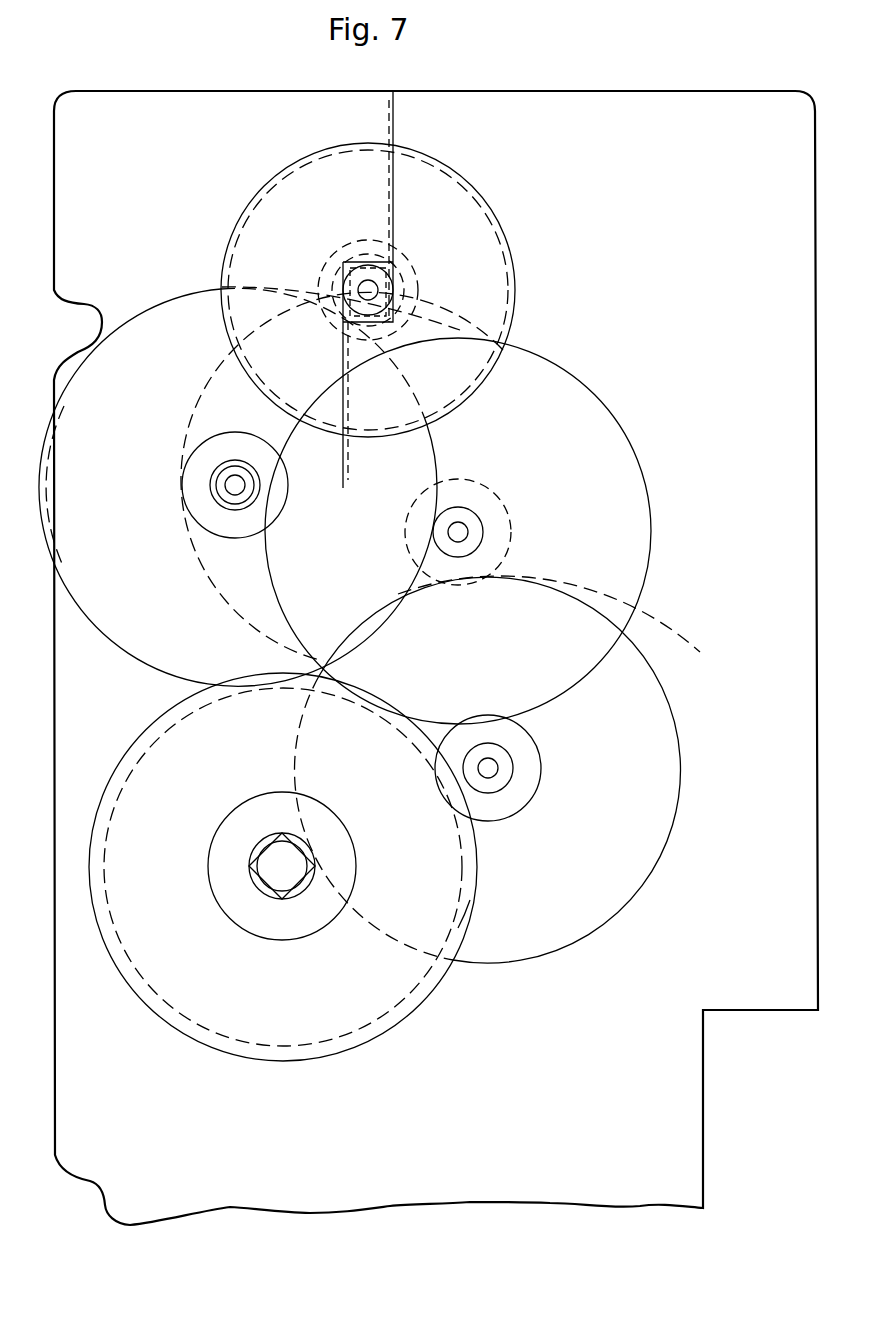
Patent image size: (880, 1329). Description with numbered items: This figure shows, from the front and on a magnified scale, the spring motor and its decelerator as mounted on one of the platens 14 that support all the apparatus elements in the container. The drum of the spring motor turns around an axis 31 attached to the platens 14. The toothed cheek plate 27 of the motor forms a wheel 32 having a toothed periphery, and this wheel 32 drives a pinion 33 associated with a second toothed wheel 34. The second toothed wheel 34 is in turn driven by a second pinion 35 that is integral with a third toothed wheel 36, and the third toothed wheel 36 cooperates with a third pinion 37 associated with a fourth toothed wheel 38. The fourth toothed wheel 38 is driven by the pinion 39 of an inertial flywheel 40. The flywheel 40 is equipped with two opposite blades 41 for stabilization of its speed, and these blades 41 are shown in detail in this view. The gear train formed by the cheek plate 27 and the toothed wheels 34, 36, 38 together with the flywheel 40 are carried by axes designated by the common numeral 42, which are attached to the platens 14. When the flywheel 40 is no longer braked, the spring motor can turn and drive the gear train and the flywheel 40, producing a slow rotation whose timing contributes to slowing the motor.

The platens 14 is at (171, 122).
The toothed cheek plate 27 is at (226, 1003).
The axis 31 is at (289, 877).
The wheel 32 is at (468, 912).
The pinion 33 is at (540, 787).
The second toothed wheel 34 is at (678, 792).
The second pinion 35 is at (513, 526).
The third toothed wheel 36 is at (632, 447).
The third pinion 37 is at (230, 540).
The fourth toothed wheel 38 is at (162, 302).
The pinion 39 is at (418, 298).
The inertial flywheel 40 is at (487, 280).
The blades 41 is at (395, 120).
The axes 42 is at (366, 292).